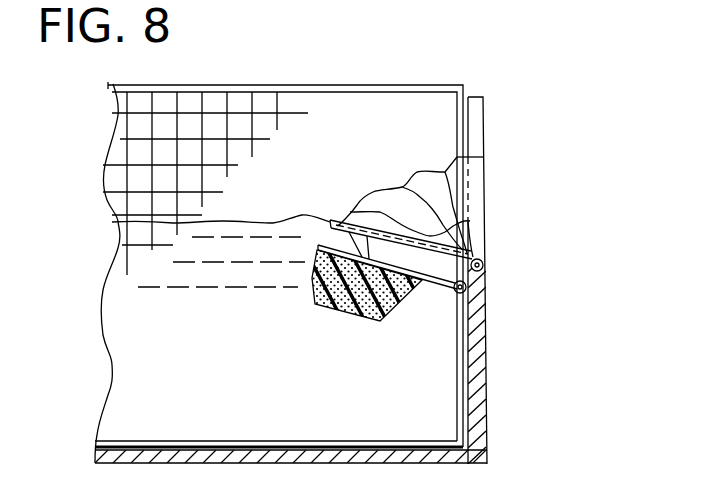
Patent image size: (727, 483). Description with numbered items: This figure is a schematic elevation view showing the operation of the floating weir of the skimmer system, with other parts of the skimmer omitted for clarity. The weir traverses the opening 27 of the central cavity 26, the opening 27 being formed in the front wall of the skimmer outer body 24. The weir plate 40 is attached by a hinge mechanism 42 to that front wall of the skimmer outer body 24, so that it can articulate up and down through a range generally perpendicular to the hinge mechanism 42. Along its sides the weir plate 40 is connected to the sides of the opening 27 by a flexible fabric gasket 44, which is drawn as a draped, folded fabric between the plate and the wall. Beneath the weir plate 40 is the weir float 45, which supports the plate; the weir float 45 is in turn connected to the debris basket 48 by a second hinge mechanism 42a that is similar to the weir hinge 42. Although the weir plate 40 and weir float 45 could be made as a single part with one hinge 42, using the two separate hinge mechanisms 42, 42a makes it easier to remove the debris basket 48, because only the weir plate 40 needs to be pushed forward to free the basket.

The debris basket 48 is at (207, 114).
The central cavity 26 is at (348, 140).
The opening 27 is at (475, 173).
The flexible fabric gasket 44 is at (408, 181).
The weir plate 40 is at (430, 237).
The weir float 45 is at (332, 312).
The hinge mechanism 42 is at (483, 265).
The hinge mechanism 42a is at (466, 291).
The skimmer outer body 24 is at (487, 408).